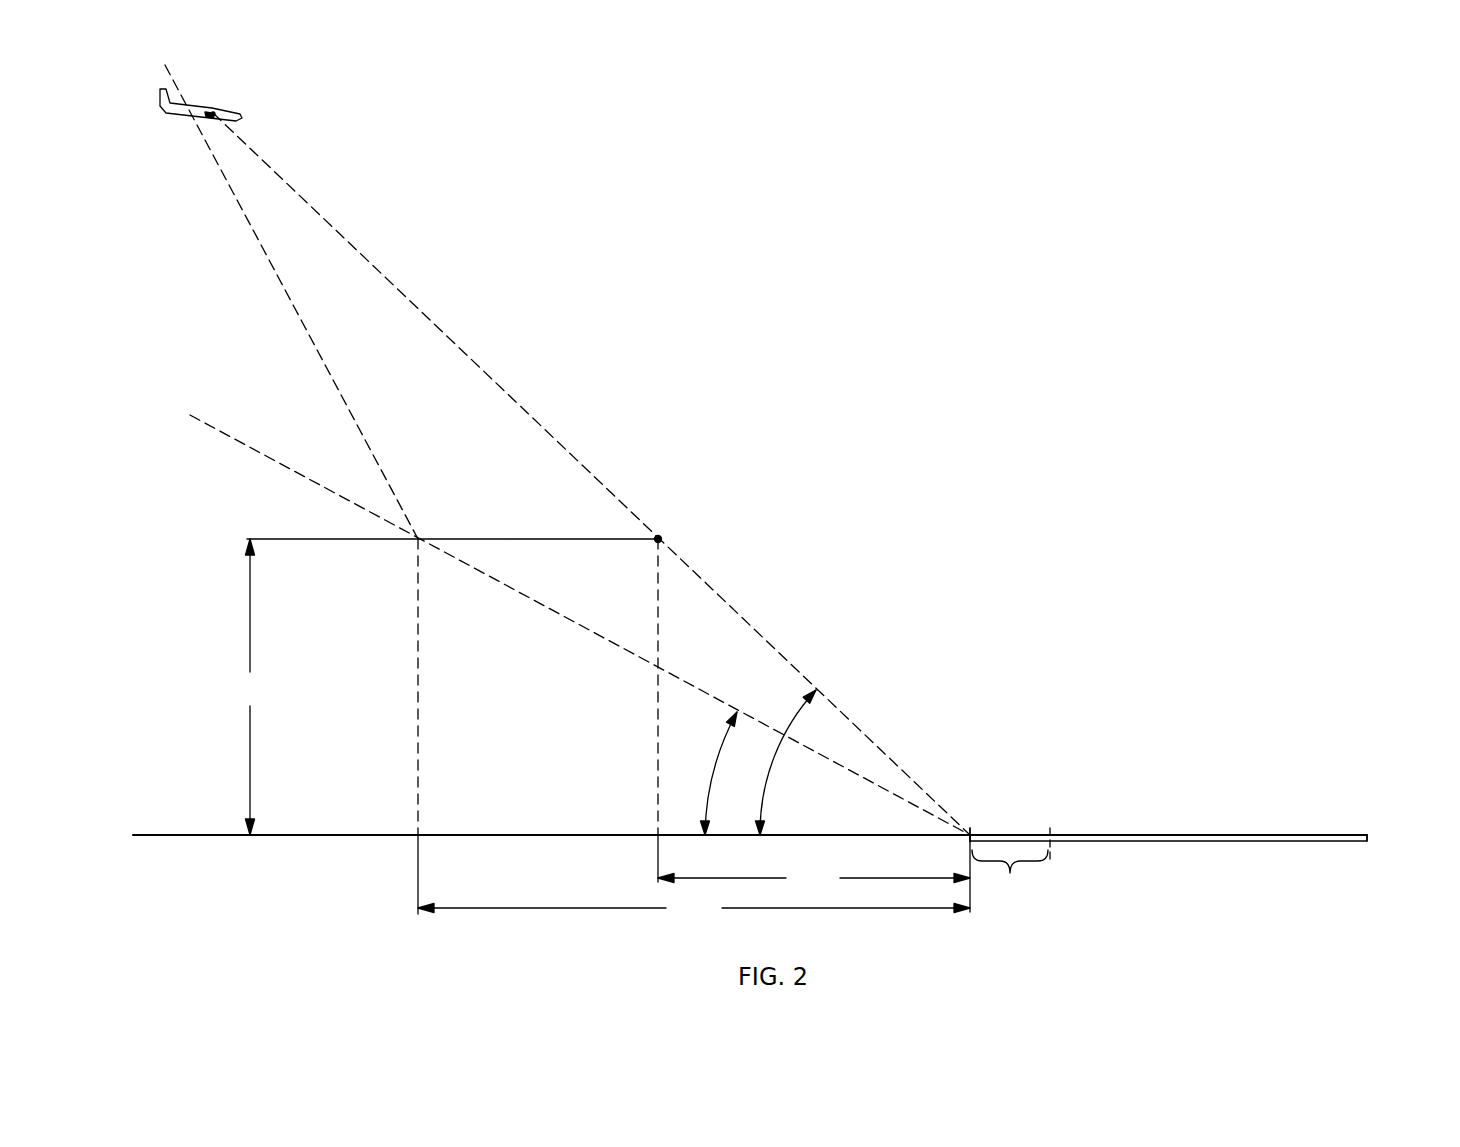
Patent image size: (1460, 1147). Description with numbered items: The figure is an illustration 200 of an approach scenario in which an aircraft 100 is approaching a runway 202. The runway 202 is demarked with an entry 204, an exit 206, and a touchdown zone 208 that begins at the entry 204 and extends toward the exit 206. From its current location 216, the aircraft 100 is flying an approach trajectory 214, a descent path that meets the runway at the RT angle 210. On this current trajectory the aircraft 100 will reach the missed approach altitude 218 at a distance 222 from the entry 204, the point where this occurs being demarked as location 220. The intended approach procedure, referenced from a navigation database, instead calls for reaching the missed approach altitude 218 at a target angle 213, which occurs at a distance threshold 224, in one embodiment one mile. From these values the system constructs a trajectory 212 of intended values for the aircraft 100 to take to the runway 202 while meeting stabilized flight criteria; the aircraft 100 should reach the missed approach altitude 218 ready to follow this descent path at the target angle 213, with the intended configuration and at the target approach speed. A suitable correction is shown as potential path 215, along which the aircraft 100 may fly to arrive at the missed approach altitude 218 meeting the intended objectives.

The aircraft 100 is at (163, 101).
The illustration 200 is at (1165, 224).
The runway 202 is at (1220, 835).
The entry 204 is at (968, 838).
The exit 206 is at (1368, 840).
The touchdown zone 208 is at (1011, 872).
The RT angle 210 is at (786, 761).
The trajectory 212 is at (572, 620).
The target angle 213 is at (714, 772).
The approach trajectory 214 is at (492, 378).
The potential path 215 is at (341, 376).
The location 216 is at (213, 117).
The missed approach altitude 218 is at (252, 687).
The location 220 is at (660, 537).
The distance 222 is at (814, 880).
The distance threshold 224 is at (694, 910).